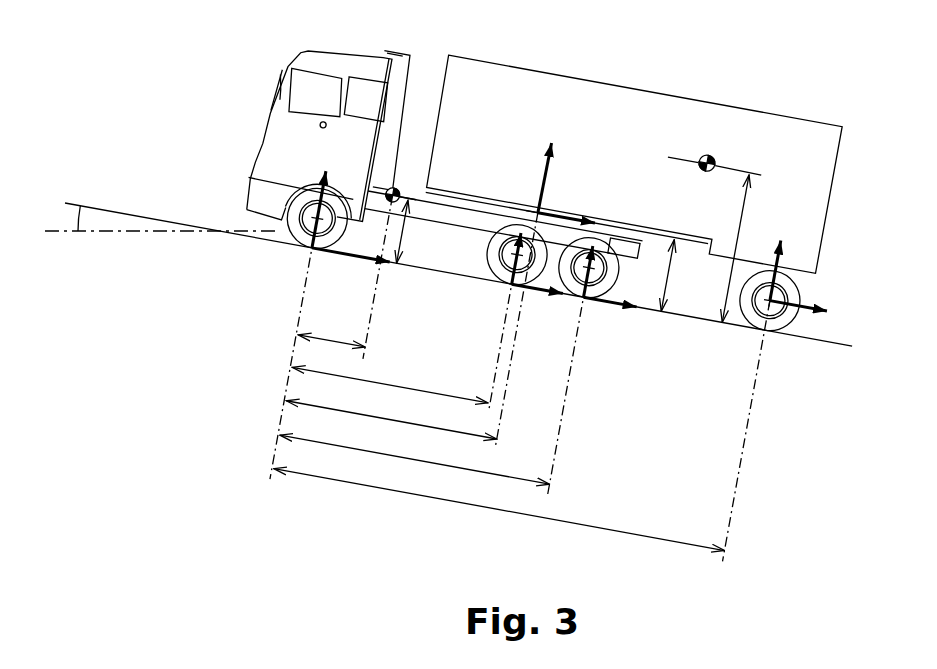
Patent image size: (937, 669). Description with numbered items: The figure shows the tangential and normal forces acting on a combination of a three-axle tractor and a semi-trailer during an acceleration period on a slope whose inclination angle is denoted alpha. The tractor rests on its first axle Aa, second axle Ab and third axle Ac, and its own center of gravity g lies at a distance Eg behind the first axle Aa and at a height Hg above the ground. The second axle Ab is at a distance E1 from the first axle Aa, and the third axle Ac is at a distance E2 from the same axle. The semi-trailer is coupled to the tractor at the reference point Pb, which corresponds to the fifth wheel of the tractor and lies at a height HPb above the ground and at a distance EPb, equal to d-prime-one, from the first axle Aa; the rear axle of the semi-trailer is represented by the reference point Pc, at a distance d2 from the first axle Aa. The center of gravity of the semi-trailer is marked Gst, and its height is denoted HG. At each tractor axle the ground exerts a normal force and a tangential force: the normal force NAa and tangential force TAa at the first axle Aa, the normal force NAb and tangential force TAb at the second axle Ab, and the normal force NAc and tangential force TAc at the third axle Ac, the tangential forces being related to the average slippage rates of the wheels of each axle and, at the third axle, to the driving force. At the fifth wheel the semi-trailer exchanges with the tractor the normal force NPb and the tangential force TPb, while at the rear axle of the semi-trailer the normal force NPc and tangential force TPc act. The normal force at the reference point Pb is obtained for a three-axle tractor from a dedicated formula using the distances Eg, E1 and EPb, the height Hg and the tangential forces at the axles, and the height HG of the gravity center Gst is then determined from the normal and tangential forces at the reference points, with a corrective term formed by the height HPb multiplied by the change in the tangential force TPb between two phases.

The inclination angle of the slope alpha is at (66, 220).
The first axle of the tractor Aa is at (247, 199).
The second axle of the tractor Ab is at (497, 256).
The third axle of the tractor Ac is at (610, 263).
The reference point Pb' Pb is at (537, 212).
The reference point Pc' Pc is at (770, 301).
The center of gravity of the tractor g is at (398, 179).
The gravity center of the semi-trailer Gst is at (715, 154).
The normal force at the first axle Aa NAa is at (337, 203).
The tangential force at the first axle Aa TAa is at (351, 267).
The normal force at the second axle Ab NAb is at (500, 227).
The tangential force at the second axle Ab TAb is at (537, 303).
The normal force at the third axle Ac NAc is at (613, 235).
The tangential force at the third axle Ac TAc is at (612, 321).
The normal force at the reference point Pb' NPb is at (556, 168).
The tangential force at the reference point Pb' TPb is at (570, 208).
The normal force at the reference point Pc' NPc is at (791, 264).
The tangential force at the reference point Pc' TPc is at (817, 319).
The height of the gravity center g of the tractor Hg is at (406, 229).
The height of the gravity center G HG is at (724, 249).
The height of the reference point Pb' HPb is at (685, 276).
The distance between the gravity center g and the first axle Aa Eg is at (331, 325).
The distance between the first axle Aa and the second axle Ab E1 is at (390, 385).
The distance between the reference point Pb' and the first axle Aa EPb is at (391, 420).
The distance between the first axle Aa and the third axle Ac E2 is at (415, 459).
The distance between the first axle Aa and the reference point Pc' d2 is at (499, 510).